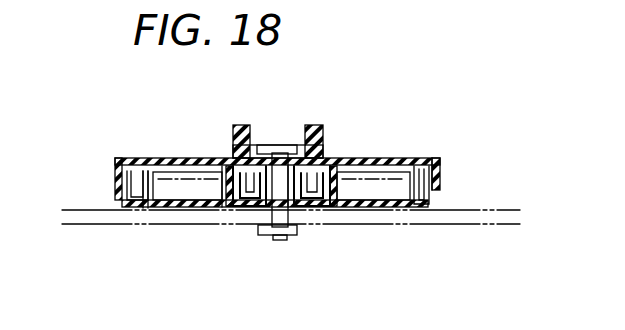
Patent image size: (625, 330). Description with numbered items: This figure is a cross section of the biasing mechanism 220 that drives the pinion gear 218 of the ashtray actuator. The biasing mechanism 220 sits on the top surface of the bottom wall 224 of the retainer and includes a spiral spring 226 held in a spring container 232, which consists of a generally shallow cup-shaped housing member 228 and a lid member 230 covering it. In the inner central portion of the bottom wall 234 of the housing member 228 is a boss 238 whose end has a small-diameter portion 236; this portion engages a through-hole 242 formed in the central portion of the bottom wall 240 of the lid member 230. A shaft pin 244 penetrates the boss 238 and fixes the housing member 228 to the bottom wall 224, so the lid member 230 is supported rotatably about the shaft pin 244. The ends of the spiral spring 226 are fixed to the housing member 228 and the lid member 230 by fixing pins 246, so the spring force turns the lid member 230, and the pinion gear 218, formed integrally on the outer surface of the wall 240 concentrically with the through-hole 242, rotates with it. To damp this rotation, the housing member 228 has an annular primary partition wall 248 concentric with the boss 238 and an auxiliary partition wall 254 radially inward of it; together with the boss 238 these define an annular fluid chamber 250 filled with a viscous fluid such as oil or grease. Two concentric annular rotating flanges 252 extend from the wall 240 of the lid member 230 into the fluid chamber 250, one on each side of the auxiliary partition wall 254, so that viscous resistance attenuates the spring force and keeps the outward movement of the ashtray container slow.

The pinion gear 218 is at (320, 140).
The biasing mechanism 220 is at (414, 106).
The bottom wall 224 is at (425, 221).
The spiral spring 226 is at (412, 173).
The housing member 228 is at (127, 202).
The lid member 230 is at (440, 181).
The spring container 232 is at (130, 155).
The bottom wall 234 is at (178, 209).
The small-diameter portion 236 is at (290, 165).
The boss 238 is at (267, 202).
The bottom wall 240 is at (167, 158).
The through-hole 242 is at (268, 145).
The shaft pin 244 is at (299, 208).
The fixing pins 246 is at (153, 210).
The primary partition wall 248 is at (345, 174).
The fluid chamber 250 is at (243, 220).
The rotating flanges 252 is at (233, 173).
The auxiliary partition wall 254 is at (245, 208).